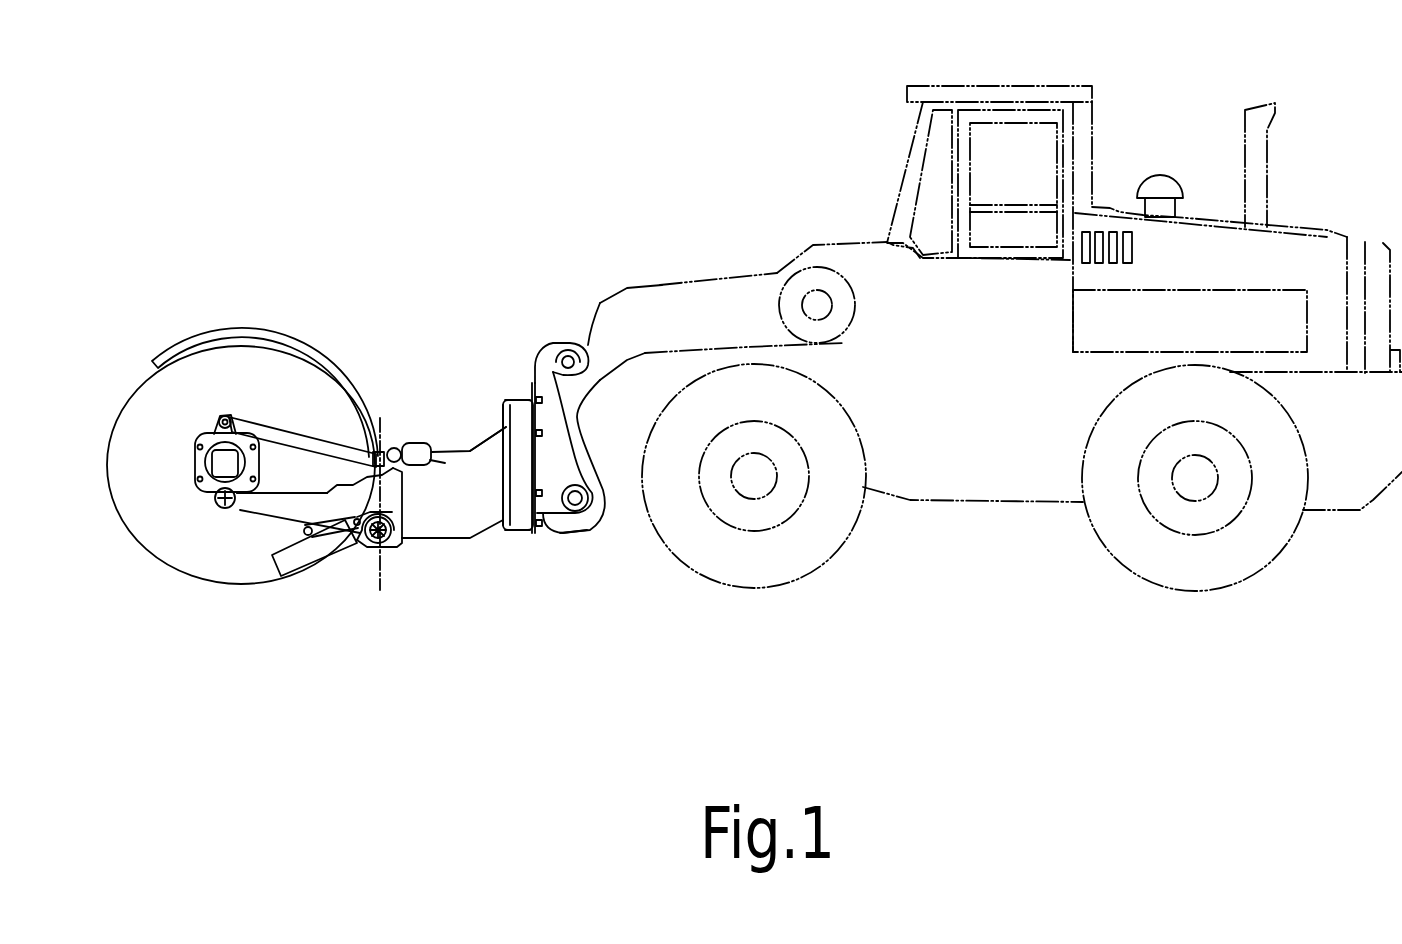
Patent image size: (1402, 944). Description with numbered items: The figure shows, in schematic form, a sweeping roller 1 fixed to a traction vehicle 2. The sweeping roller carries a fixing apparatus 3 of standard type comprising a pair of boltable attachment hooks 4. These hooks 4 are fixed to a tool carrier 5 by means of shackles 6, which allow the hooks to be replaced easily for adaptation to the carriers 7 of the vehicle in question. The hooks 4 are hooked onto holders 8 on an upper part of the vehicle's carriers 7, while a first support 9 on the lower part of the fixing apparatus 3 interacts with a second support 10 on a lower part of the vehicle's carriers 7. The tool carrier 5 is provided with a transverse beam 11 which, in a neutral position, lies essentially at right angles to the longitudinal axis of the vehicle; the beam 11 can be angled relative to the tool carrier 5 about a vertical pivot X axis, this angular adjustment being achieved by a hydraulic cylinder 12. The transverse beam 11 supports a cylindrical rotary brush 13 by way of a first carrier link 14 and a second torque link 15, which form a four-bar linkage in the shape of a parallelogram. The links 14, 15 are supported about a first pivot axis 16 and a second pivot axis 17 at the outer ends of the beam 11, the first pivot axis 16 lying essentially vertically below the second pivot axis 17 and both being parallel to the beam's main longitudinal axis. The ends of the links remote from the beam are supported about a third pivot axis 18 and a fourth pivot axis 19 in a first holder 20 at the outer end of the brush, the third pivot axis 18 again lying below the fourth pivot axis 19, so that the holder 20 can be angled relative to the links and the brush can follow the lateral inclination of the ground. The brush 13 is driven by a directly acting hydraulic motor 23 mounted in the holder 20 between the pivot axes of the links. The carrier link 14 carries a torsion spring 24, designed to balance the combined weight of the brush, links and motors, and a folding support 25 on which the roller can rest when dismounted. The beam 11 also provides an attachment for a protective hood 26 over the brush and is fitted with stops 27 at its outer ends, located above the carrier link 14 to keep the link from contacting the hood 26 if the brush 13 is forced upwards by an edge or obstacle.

The sweeping roller 1 is at (283, 270).
The traction vehicle 2 is at (840, 142).
The fixing apparatus 3 is at (535, 340).
The attachment hooks 4 is at (558, 343).
The tool carrier 5 is at (487, 450).
The shackles 6 is at (517, 397).
The carriers 7 is at (692, 293).
The holders 8 is at (547, 360).
The lower pin 9 is at (595, 510).
The support 10 is at (608, 505).
The transverse beam 11 is at (404, 520).
The hydraulic cylinder 12 is at (412, 452).
The rotary brush 13 is at (222, 570).
The carrier link 14 is at (290, 540).
The torque link 15 is at (280, 437).
The first pivot axis 16 is at (377, 578).
The second pivot axis 17 is at (347, 457).
The third pivot axis 18 is at (195, 548).
The fourth pivot axis 19 is at (225, 422).
The first holder 20 is at (213, 435).
The hydraulic motor 23 is at (217, 463).
The torsion spring 24 is at (394, 552).
The folding support 25 is at (308, 540).
The protective hood 26 is at (183, 342).
The stops 27 is at (330, 540).
The pivot axis X is at (357, 560).